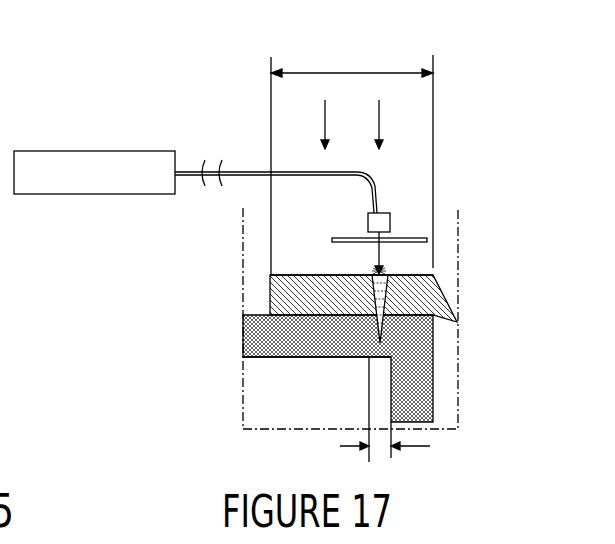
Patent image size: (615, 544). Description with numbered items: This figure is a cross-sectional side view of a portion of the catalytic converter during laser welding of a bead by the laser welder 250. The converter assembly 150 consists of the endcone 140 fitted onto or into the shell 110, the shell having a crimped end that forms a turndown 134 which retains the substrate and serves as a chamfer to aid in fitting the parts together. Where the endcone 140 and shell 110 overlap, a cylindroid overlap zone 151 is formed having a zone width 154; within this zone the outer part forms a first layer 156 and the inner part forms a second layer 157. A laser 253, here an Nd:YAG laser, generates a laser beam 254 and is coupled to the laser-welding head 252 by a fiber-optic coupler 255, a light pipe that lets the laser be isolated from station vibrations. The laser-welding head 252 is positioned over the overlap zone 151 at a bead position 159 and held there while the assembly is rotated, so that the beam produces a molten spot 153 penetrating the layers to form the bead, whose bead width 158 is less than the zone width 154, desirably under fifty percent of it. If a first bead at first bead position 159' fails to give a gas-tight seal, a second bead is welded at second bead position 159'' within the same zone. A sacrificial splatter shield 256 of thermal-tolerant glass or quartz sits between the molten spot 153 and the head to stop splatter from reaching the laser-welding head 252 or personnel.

The shell 110 is at (258, 345).
The turndown 134 is at (412, 409).
The endcone 140 is at (270, 277).
The converter assembly 150 is at (275, 295).
The overlap zone 151 is at (312, 73).
The molten spot 153 is at (385, 280).
The zone width 154 is at (398, 73).
The first layer 156 is at (285, 285).
The second layer 157 is at (260, 340).
The bead width 158 is at (375, 448).
The bead position 159 is at (351, 124).
The first bead position 159' is at (435, 96).
The second bead position 159'' is at (270, 95).
The laser welder 250 is at (218, 463).
The laser-welding head 252 is at (381, 216).
The laser 253 is at (115, 151).
The laser beam 254 is at (382, 252).
The fiber-optic coupler 255 is at (350, 176).
The splatter shield 256 is at (356, 244).